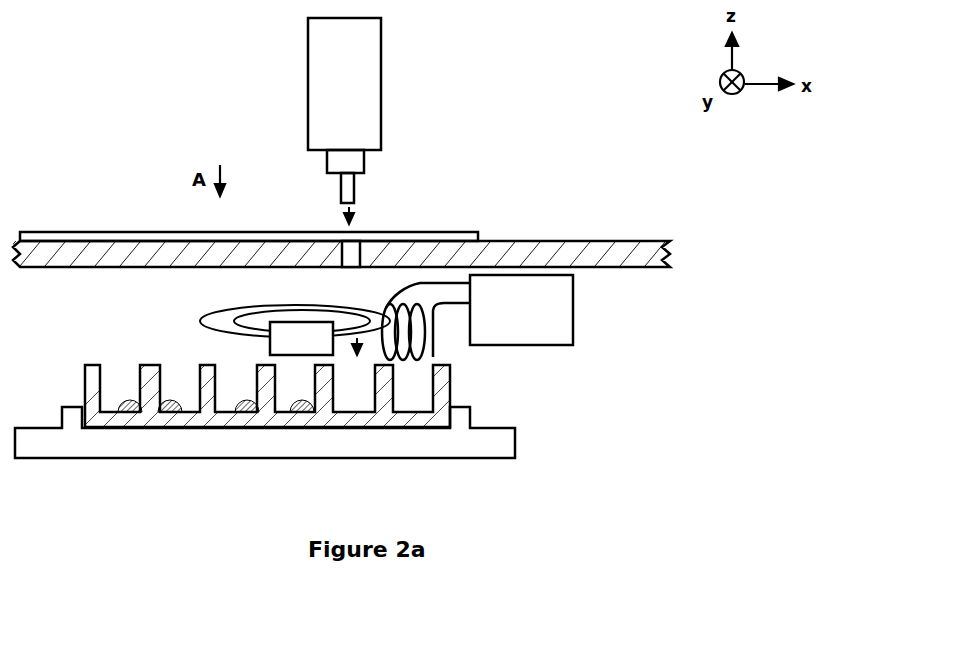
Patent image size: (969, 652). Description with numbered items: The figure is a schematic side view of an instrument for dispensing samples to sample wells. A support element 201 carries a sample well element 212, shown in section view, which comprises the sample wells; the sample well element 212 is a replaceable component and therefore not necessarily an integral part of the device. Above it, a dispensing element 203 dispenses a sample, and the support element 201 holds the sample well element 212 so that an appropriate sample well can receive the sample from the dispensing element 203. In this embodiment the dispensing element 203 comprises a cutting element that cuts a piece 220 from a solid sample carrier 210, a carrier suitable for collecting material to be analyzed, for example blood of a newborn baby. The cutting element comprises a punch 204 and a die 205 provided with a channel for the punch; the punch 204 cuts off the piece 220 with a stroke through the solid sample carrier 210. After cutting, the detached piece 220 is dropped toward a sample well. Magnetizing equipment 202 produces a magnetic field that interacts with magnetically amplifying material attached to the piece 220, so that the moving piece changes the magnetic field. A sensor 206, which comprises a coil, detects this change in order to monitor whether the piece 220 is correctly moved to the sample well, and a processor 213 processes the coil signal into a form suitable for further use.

The support element 201 is at (515, 450).
The magnetizing equipment 202 is at (270, 350).
The dispensing element 203 is at (381, 60).
The punch 204 is at (355, 195).
The die 205 is at (528, 220).
The sensor 206 is at (483, 349).
The solid sample carrier 210 is at (452, 219).
The sample well element 212 is at (452, 395).
The processor 213 is at (521, 310).
The piece 220 is at (346, 320).